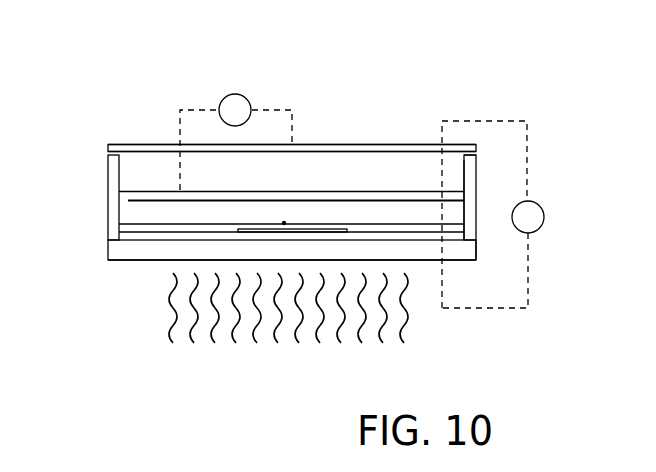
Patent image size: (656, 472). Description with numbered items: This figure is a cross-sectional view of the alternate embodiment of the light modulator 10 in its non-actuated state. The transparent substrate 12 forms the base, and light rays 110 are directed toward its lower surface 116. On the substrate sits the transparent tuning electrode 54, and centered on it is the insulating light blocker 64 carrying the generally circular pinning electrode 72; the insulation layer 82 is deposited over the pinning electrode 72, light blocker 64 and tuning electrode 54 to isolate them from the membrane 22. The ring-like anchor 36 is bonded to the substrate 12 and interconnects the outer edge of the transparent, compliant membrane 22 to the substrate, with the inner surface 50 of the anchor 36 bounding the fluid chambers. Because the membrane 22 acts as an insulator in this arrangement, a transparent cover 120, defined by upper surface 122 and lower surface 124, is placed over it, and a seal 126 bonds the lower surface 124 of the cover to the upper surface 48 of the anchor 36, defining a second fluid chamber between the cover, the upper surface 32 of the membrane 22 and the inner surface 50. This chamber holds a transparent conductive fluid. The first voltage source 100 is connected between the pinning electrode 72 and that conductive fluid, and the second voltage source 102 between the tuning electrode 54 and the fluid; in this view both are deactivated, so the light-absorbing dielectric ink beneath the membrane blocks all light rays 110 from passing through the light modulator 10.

The light modulator 10 is at (561, 295).
The transparent substrate 12 is at (117, 261).
The membrane 22 is at (126, 204).
The upper surface of membrane 32 is at (150, 190).
The anchor 36 is at (108, 200).
The upper surface of anchor 48 is at (108, 147).
The inner surface of anchor 50 is at (462, 178).
The tuning electrode 54 is at (135, 246).
The light blocker 64 is at (238, 233).
The pinning electrode 72 is at (284, 222).
The insulation layer 82 is at (162, 246).
The first voltage source 100 is at (235, 93).
The second voltage source 102 is at (545, 207).
The light rays 110 is at (405, 330).
The lower surface of substrate 116 is at (430, 262).
The transparent cover 120 is at (332, 144).
The upper surface of cover 122 is at (139, 150).
The lower surface of cover 124 is at (355, 152).
The seal 126 is at (476, 146).